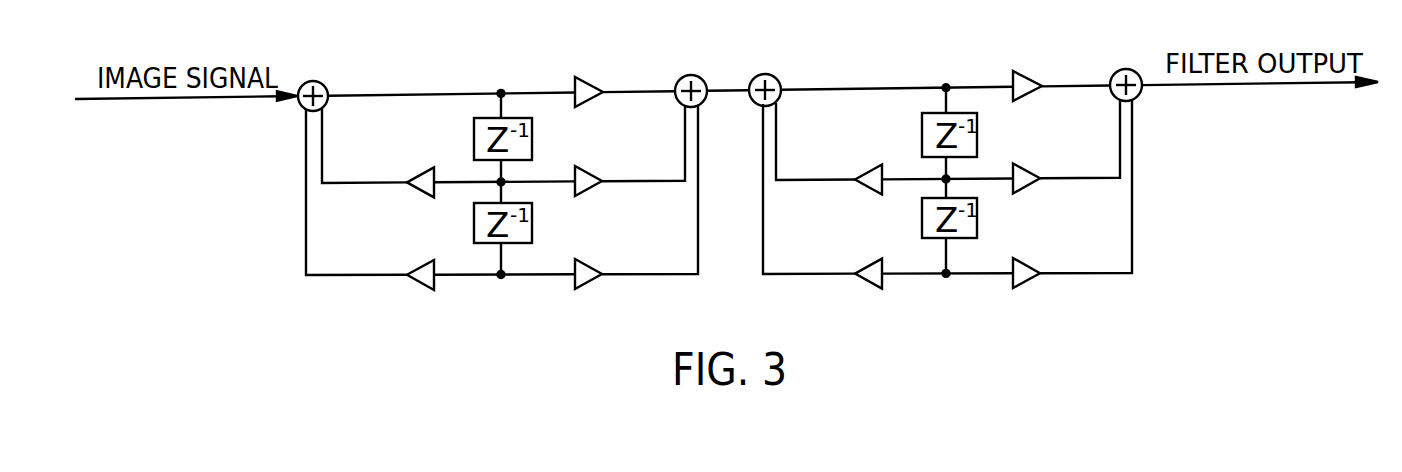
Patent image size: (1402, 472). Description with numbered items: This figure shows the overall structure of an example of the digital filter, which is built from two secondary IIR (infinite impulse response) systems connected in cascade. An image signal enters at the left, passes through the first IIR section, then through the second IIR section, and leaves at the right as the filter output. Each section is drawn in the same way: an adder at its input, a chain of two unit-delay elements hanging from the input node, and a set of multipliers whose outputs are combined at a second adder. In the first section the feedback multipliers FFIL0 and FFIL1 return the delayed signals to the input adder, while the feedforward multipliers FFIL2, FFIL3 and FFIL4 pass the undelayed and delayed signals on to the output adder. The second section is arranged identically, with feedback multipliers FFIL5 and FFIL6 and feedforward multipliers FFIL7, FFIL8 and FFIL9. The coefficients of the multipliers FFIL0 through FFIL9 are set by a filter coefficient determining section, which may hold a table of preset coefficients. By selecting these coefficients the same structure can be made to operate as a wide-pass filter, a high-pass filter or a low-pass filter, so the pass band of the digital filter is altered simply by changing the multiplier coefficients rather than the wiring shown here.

The multiplier FFIL0 is at (424, 166).
The multiplier FFIL1 is at (420, 260).
The multiplier FFIL2 is at (587, 72).
The multiplier FFIL3 is at (586, 164).
The multiplier FFIL4 is at (578, 257).
The multiplier FFIL5 is at (871, 163).
The multiplier FFIL6 is at (874, 257).
The multiplier FFIL7 is at (1025, 67).
The multiplier FFIL8 is at (1027, 160).
The multiplier FFIL9 is at (1025, 256).